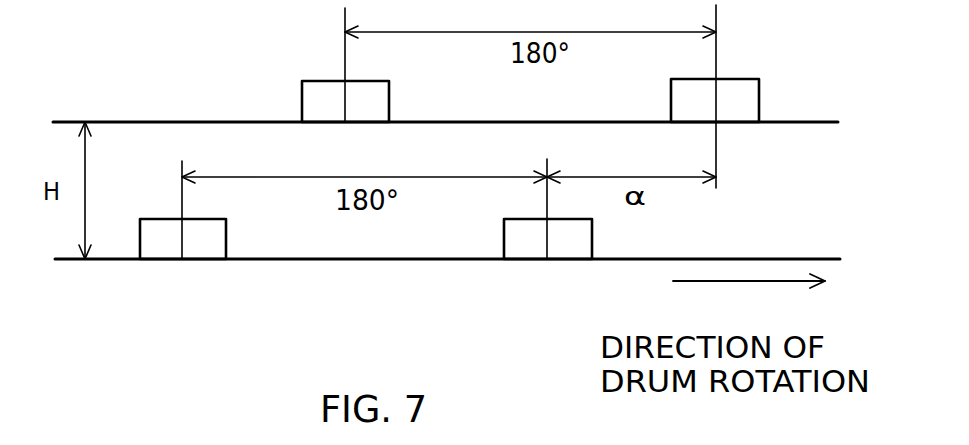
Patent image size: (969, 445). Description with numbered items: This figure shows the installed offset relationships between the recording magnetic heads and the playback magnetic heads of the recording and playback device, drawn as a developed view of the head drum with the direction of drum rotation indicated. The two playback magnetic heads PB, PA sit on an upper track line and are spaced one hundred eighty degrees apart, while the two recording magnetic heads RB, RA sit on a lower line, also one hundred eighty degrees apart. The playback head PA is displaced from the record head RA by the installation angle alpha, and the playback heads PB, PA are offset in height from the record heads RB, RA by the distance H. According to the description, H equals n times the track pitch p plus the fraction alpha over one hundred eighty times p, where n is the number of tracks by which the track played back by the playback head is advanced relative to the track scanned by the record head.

The playback magnetic head PB is at (318, 65).
The playback magnetic head PA is at (735, 96).
The recording magnetic head RB is at (183, 238).
The recording magnetic head RA is at (548, 236).